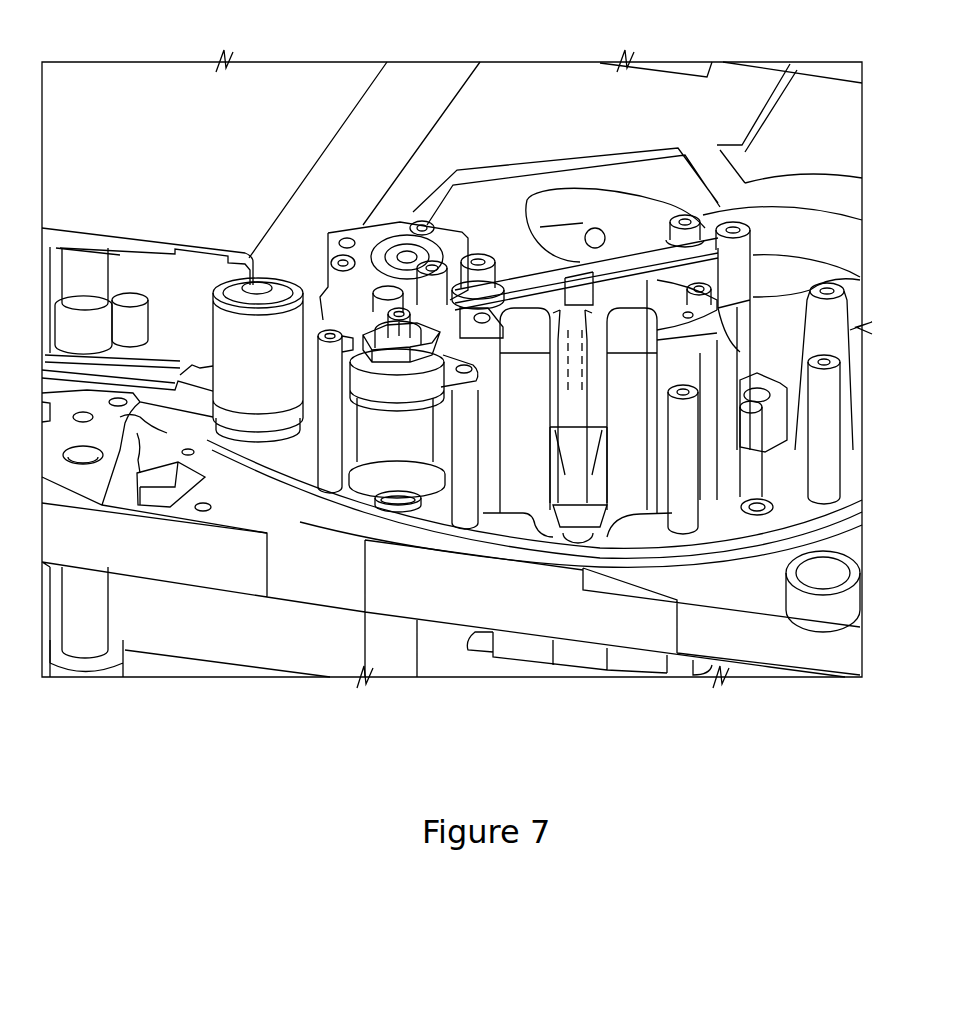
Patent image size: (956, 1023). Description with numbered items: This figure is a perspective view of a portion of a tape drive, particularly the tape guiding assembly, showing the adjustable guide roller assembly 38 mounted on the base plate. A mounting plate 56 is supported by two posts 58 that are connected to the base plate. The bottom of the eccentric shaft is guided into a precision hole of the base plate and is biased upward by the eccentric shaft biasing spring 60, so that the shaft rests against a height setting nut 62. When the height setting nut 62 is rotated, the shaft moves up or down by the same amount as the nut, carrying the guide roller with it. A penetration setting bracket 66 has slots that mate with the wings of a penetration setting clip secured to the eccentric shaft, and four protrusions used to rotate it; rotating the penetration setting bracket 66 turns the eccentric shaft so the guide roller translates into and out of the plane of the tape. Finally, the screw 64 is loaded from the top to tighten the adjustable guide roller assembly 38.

The adjustable guide roller assembly 38 is at (410, 463).
The mounting plate 56 is at (327, 337).
The posts 58 is at (312, 449).
The eccentric shaft biasing spring 60 is at (401, 514).
The height setting nut 62 is at (375, 318).
The screw 64 is at (405, 295).
The penetration setting bracket 66 is at (428, 316).